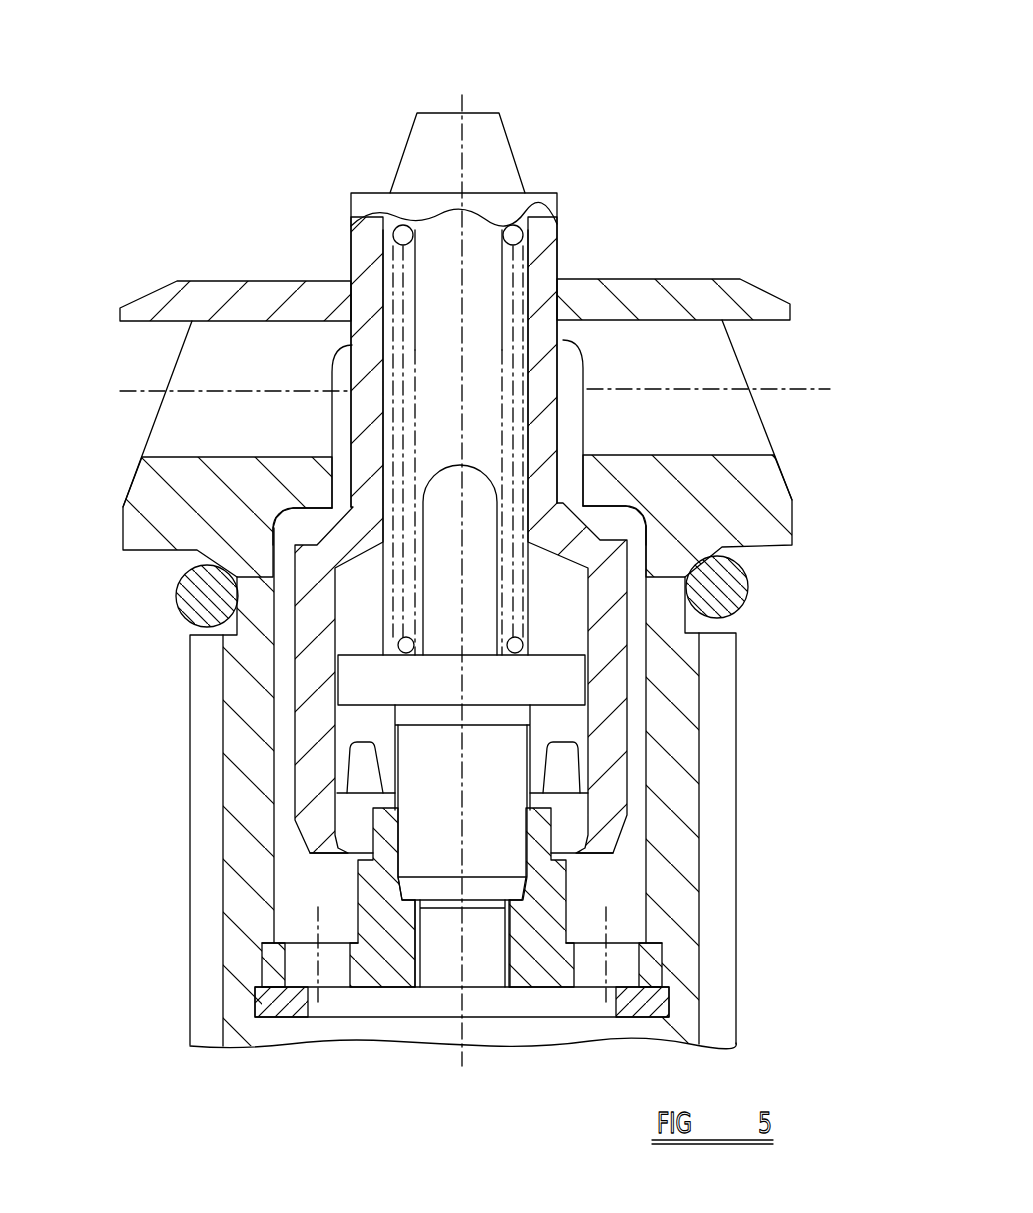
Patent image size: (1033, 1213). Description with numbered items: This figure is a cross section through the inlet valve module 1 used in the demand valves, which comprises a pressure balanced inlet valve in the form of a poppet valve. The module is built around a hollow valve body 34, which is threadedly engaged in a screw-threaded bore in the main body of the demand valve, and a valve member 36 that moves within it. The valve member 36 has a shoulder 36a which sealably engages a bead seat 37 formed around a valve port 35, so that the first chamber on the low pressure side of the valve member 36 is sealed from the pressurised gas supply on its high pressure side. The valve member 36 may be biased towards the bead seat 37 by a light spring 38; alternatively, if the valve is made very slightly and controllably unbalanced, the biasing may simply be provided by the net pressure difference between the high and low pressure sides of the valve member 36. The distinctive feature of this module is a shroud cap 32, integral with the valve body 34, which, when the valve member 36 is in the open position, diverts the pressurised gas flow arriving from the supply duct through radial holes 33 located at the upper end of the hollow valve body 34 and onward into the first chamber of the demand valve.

The inlet valve module 1 is at (203, 110).
The shroud cap 32 is at (270, 282).
The radial holes 33 is at (182, 373).
The valve body 34 is at (688, 678).
The valve port 35 is at (572, 473).
The valve member 36 is at (612, 698).
The shoulder 36a is at (312, 520).
The bead seat 37 is at (619, 520).
The light spring 38 is at (520, 293).